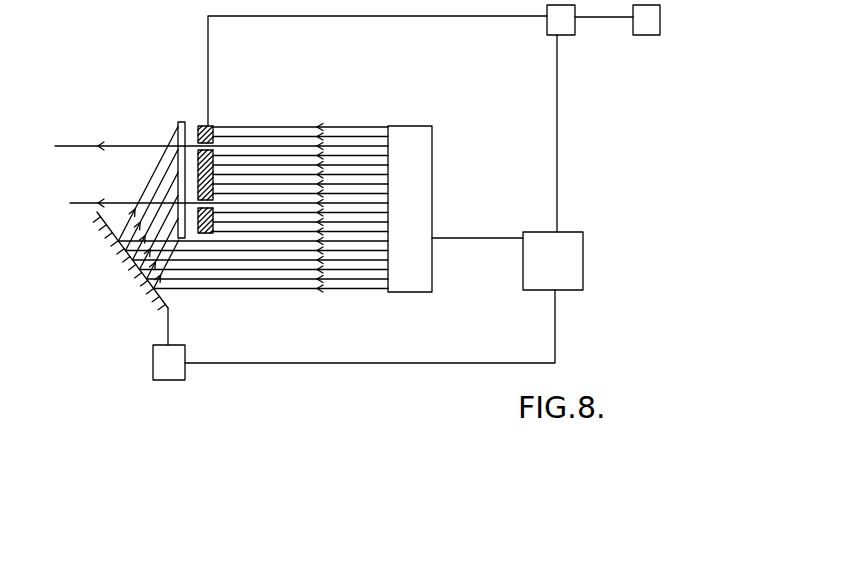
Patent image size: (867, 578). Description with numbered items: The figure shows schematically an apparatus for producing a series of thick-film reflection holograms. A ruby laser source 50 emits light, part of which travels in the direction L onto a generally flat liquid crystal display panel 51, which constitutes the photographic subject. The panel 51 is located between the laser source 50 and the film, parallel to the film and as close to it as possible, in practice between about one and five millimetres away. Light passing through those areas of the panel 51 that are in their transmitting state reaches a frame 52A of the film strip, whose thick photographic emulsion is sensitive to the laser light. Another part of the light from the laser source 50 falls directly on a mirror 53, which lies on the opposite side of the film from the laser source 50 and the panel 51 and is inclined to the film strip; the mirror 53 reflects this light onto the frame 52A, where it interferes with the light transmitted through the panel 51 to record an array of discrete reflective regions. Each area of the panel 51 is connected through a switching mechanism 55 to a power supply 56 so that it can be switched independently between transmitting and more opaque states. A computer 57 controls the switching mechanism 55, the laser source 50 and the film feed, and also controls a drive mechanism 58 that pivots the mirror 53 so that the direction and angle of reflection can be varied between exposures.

The ruby laser source 50 is at (431, 134).
The liquid crystal display panel 51 is at (210, 126).
The frame of the film 52A is at (181, 122).
The mirror 53 is at (114, 247).
The switching mechanism 55 is at (568, 22).
The power supply 56 is at (648, 30).
The computer 57 is at (568, 256).
The drive mechanism 58 is at (165, 357).
The direction L is at (221, 196).